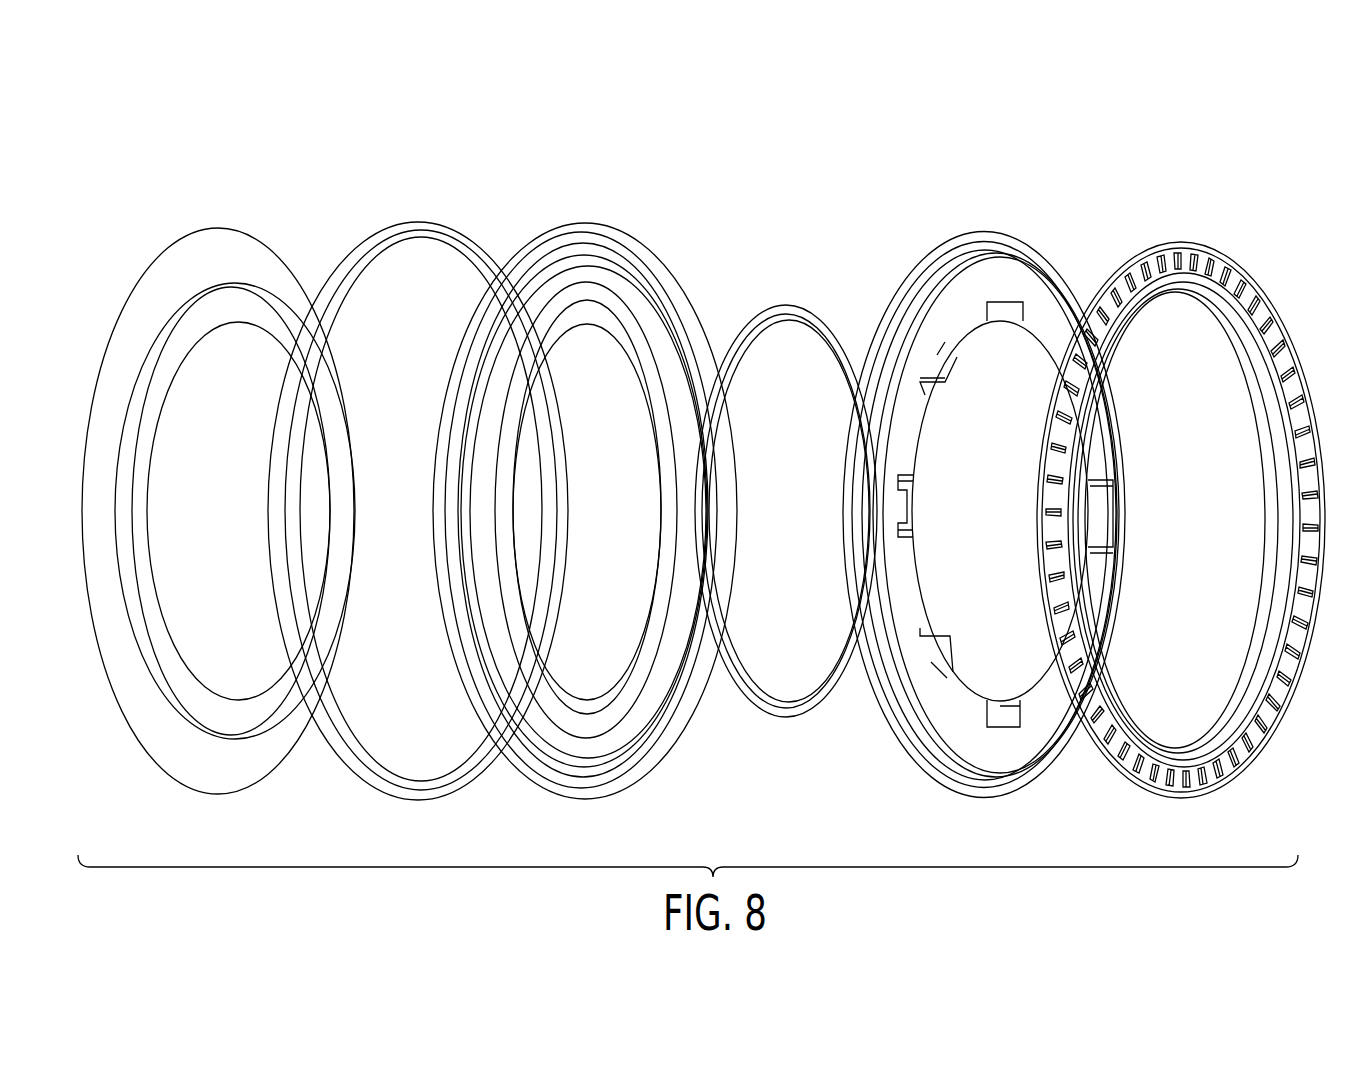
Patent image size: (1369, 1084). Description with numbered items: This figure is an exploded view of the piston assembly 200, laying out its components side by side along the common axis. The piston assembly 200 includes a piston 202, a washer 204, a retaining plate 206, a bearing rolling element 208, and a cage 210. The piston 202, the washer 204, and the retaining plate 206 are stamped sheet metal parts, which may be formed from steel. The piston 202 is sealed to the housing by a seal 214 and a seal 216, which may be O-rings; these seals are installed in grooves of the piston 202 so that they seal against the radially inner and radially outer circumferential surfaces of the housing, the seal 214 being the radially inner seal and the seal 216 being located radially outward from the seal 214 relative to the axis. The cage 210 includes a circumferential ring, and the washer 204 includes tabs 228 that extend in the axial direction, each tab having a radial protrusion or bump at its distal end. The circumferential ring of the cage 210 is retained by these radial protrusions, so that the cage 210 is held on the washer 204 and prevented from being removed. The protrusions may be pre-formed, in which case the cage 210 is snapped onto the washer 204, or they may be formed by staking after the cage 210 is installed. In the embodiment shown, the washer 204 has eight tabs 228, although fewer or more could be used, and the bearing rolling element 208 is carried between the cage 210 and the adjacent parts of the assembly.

The piston assembly 200 is at (1100, 150).
The piston 202 is at (593, 222).
The washer 204 is at (988, 231).
The retaining plate 206 is at (218, 224).
The bearing rolling element 208 is at (1272, 294).
The cage 210 is at (1188, 242).
The seal 214 is at (784, 303).
The seal 216 is at (422, 220).
The tabs 228 is at (917, 500).